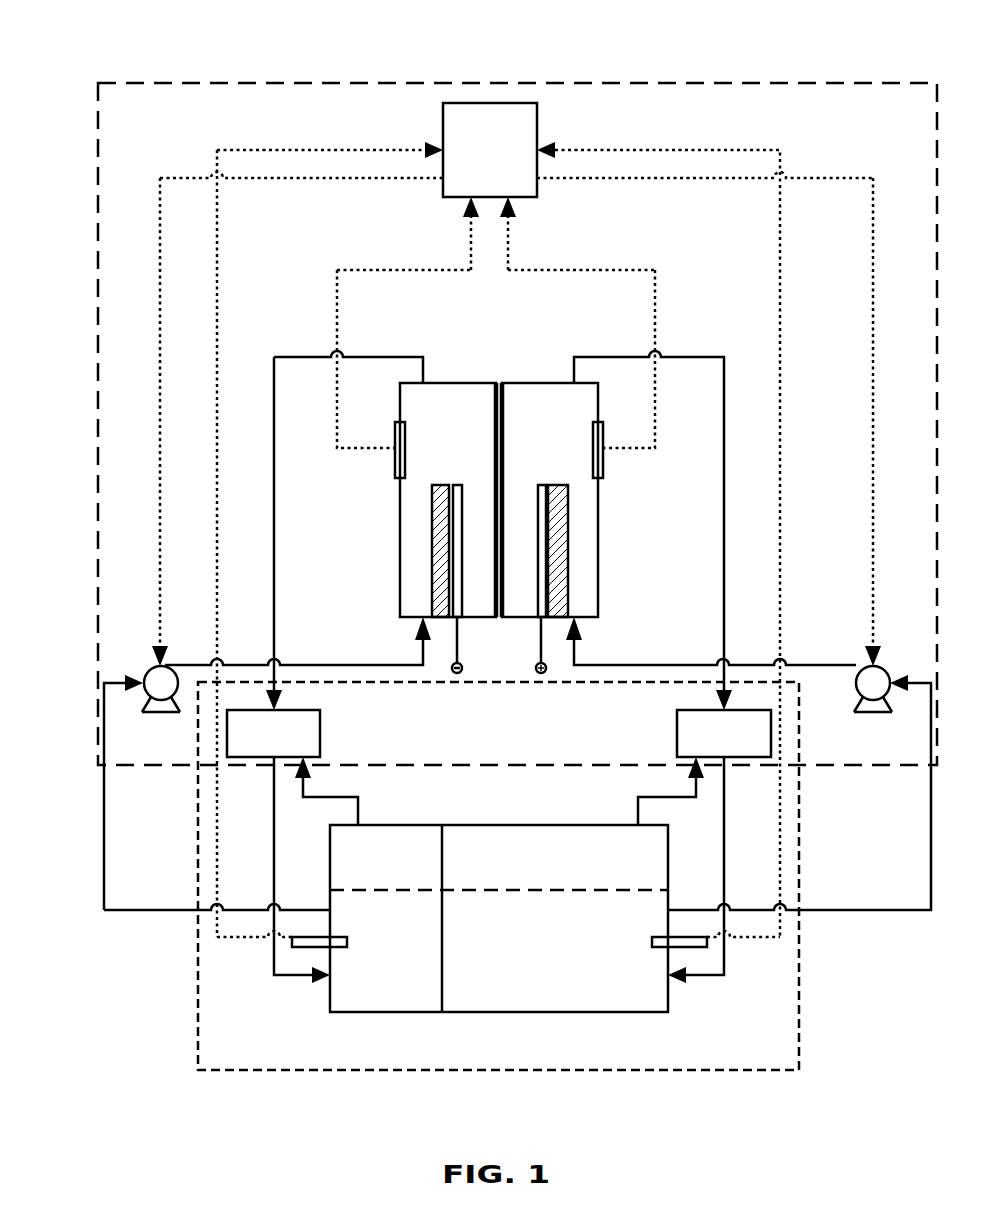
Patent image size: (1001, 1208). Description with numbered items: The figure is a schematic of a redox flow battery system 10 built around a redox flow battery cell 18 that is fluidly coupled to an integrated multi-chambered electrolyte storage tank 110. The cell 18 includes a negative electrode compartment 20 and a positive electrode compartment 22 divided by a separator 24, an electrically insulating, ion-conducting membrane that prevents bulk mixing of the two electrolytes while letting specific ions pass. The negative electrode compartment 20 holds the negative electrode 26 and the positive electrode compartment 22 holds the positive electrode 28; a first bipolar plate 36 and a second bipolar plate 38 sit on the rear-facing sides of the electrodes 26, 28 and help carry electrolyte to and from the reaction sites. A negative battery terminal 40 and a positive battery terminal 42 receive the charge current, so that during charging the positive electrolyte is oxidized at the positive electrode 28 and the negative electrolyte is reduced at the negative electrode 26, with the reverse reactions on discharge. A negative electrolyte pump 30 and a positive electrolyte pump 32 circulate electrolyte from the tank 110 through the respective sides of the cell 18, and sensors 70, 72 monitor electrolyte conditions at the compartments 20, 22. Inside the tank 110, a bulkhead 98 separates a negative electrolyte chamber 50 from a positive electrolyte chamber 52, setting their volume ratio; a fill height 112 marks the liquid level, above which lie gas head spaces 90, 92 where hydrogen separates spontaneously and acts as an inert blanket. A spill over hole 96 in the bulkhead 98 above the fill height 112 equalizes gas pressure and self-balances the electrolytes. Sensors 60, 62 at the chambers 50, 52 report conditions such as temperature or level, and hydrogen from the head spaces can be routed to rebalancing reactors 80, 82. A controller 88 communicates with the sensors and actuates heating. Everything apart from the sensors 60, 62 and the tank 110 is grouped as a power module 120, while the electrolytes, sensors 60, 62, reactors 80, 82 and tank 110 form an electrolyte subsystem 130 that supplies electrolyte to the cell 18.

The redox flow battery system 10 is at (133, 50).
The redox flow battery cell 18 is at (506, 338).
The negative electrode compartment 20 is at (461, 433).
The positive electrode compartment 22 is at (568, 433).
The separator 24 is at (505, 442).
The negative electrode 26 is at (463, 510).
The positive electrode 28 is at (538, 510).
The negative electrolyte pump 30 is at (131, 646).
The positive electrolyte pump 32 is at (903, 646).
The first bipolar plate 36 is at (432, 548).
The second bipolar plate 38 is at (568, 558).
The negative battery terminal 40 is at (458, 636).
The positive battery terminal 42 is at (540, 636).
The negative electrolyte chamber 50 is at (398, 970).
The positive electrolyte chamber 52 is at (632, 970).
The sensor 60 is at (313, 937).
The sensor 62 is at (678, 937).
The sensor 70 is at (395, 470).
The sensor 72 is at (603, 470).
The rebalancing reactor 80 is at (285, 748).
The rebalancing reactor 82 is at (735, 748).
The controller 88 is at (501, 171).
The gas head space 90 is at (398, 880).
The gas head space 92 is at (614, 880).
The spill over hole 96 is at (443, 872).
The bulkhead 98 is at (443, 983).
The integrated multi-chambered electrolyte storage tank 110 is at (475, 804).
The fill height 112 is at (490, 890).
The power module 120 is at (872, 83).
The electrolyte subsystem 130 is at (800, 945).